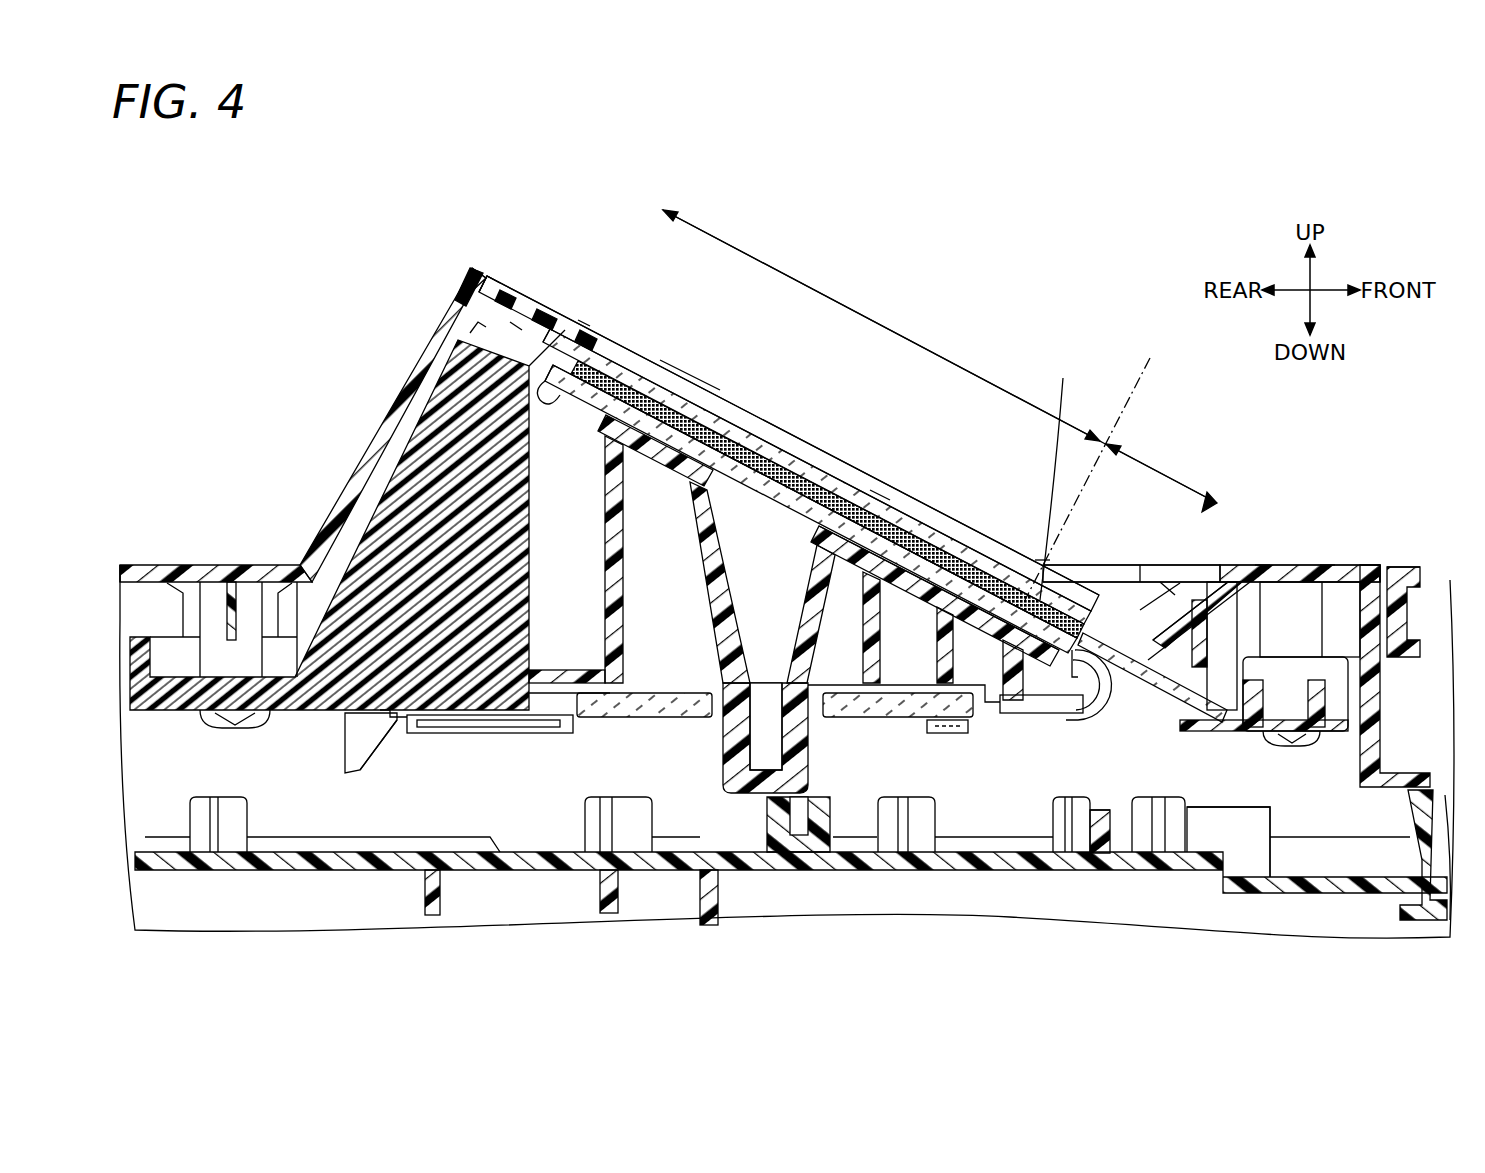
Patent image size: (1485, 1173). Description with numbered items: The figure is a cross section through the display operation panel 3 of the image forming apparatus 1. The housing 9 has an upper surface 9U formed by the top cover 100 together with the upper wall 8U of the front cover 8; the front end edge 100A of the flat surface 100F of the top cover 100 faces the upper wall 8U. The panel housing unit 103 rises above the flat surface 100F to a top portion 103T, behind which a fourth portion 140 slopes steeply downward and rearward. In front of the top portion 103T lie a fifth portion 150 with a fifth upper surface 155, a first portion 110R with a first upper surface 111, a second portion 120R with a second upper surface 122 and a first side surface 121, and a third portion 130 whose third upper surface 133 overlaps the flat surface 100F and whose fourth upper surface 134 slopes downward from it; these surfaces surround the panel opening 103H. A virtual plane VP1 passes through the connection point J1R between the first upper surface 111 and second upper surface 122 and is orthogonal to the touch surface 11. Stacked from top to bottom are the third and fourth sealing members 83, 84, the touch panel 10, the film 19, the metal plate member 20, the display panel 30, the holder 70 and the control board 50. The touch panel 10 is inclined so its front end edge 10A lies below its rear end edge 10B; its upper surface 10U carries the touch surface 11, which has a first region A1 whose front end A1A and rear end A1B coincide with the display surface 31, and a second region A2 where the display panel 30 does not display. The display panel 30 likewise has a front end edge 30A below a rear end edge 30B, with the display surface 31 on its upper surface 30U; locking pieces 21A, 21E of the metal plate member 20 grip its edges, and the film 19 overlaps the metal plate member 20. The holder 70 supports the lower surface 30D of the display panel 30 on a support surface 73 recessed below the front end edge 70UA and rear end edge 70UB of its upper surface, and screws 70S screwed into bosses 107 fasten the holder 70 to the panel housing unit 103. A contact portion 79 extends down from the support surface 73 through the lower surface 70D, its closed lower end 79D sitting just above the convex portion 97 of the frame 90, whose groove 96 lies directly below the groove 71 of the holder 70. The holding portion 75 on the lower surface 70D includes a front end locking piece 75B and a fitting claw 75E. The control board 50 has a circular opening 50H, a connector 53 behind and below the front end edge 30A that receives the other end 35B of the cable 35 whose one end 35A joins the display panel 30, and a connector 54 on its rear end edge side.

The image forming apparatus 1 is at (225, 228).
The display operation panel 3 is at (760, 415).
The front cover 8 is at (1408, 562).
The upper wall 8U is at (1435, 562).
The housing 9 is at (145, 545).
The upper surface 9U is at (1310, 562).
The touch panel 10 is at (880, 495).
The front end edge 10A is at (1085, 668).
The rear end edge 10B is at (600, 340).
The upper surface 10U is at (990, 506).
The touch surface 11 is at (940, 495).
The film 19 is at (462, 283).
The metal plate member 20 is at (478, 322).
The locking piece 21A is at (545, 400).
The locking piece 21E is at (940, 732).
The display panel 30 is at (776, 452).
The front end edge 30A is at (1075, 685).
The rear end edge 30B is at (570, 390).
The lower surface 30D is at (783, 520).
The upper surface 30U is at (1050, 580).
The display surface 31 is at (808, 470).
The cable 35 is at (1080, 660).
The one end 35A is at (1088, 630).
The other end 35B is at (1075, 680).
The control board 50 is at (870, 724).
The circular opening 50H is at (760, 700).
The connector 53 is at (935, 722).
The connector 54 is at (573, 722).
The holder 70 is at (395, 487).
The lower surface 70D is at (620, 697).
The screw 70S is at (205, 728).
The front end edge 70UA is at (1170, 690).
The rear end edge 70UB is at (565, 330).
The groove 71 is at (1285, 715).
The support surface 73 is at (650, 450).
The holding portion 75 is at (340, 755).
The front end locking piece 75B is at (1100, 680).
The fitting claw 75E is at (363, 745).
The contact portion 79 is at (720, 762).
The lower end 79D is at (767, 800).
The third sealing member 83 is at (1225, 690).
The fourth sealing member 84 is at (585, 325).
The frame 90 is at (515, 845).
The groove 96 is at (1305, 875).
The convex portion 97 is at (790, 800).
The top cover 100 is at (195, 553).
The front end edge 100A is at (1385, 565).
The flat surface 100F is at (1325, 562).
The panel housing unit 103 is at (455, 262).
The top portion 103T is at (470, 268).
The panel opening 103H is at (880, 494).
The boss 107 is at (220, 660).
The first portion 110R is at (680, 370).
The first upper surface 111 is at (712, 385).
The second portion 120R is at (1120, 562).
The first side surface 121 is at (1168, 590).
The second upper surface 122 is at (1143, 562).
The third portion 130 is at (1287, 562).
The third upper surface 133 is at (1262, 562).
The fourth upper surface 134 is at (1195, 580).
The fourth portion 140 is at (375, 455).
The fifth portion 150 is at (493, 276).
The fifth upper surface 155 is at (522, 330).
The first region A1 is at (881, 325).
The front end A1A is at (1035, 560).
The rear end A1B is at (600, 350).
The second region A2 is at (1161, 473).
The connection point J1R is at (1073, 475).
The virtual plane VP1 is at (1103, 465).